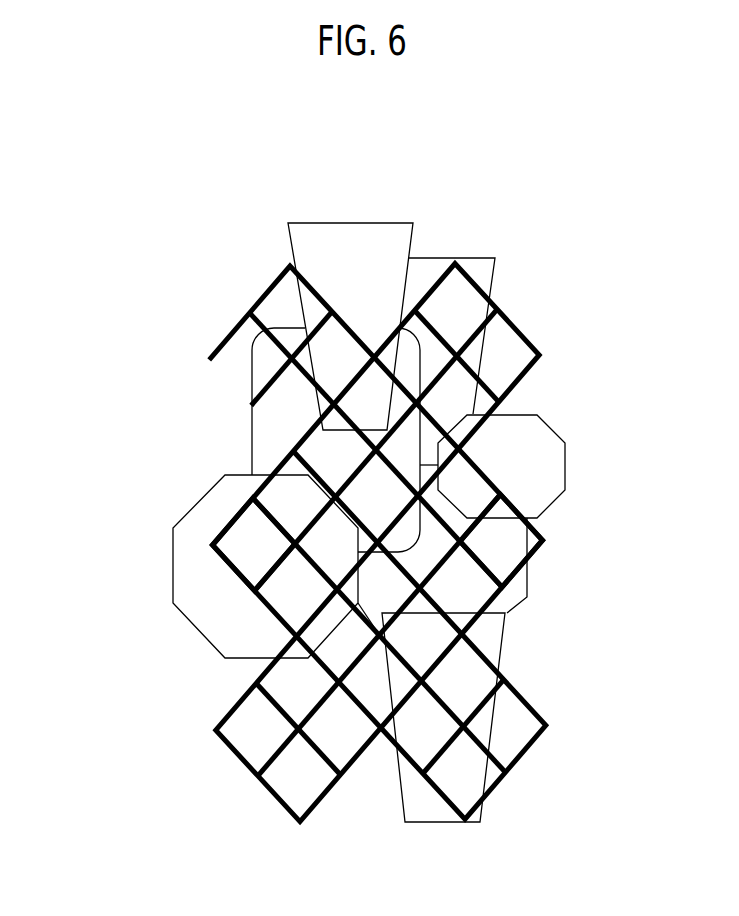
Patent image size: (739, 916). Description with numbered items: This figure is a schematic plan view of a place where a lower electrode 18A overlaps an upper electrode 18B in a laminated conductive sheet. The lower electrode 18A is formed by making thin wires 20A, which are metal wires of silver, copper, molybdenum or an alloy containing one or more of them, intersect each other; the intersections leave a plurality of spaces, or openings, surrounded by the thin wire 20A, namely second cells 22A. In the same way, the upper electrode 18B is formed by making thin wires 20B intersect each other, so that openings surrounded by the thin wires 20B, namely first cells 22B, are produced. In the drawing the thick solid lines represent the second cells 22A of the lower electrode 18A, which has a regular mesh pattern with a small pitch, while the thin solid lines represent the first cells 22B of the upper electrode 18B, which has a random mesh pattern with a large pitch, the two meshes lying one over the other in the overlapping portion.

The lower electrode 18A is at (298, 748).
The upper electrode 18B is at (481, 717).
The thin wire 20A is at (245, 580).
The thin wire 20B is at (178, 552).
The second cell 22A is at (385, 568).
The first cell 22B is at (360, 519).